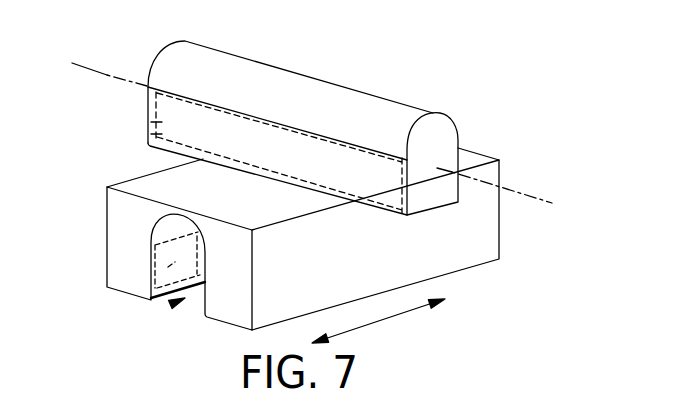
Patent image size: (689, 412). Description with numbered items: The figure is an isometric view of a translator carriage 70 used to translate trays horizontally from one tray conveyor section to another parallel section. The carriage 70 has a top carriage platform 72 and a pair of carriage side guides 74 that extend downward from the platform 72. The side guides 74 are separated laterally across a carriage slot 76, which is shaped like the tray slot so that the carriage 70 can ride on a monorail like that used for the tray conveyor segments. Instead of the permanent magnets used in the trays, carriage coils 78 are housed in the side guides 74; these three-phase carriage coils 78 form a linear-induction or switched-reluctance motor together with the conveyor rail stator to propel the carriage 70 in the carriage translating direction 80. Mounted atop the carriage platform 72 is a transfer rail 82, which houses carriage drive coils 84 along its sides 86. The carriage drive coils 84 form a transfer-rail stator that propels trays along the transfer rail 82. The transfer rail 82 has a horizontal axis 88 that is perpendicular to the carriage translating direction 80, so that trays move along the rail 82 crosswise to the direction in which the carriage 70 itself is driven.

The translator carriage 70 is at (325, 197).
The carriage platform 72 is at (266, 254).
The carriage side guides 74 is at (112, 243).
The carriage slot 76 is at (172, 305).
The carriage coils 78 is at (152, 273).
The carriage translating direction 80 is at (382, 320).
The transfer rail 82 is at (307, 162).
The carriage drive coils 84 is at (148, 118).
The sides of transfer rail 86 is at (460, 148).
The horizontal axis 88 is at (528, 194).